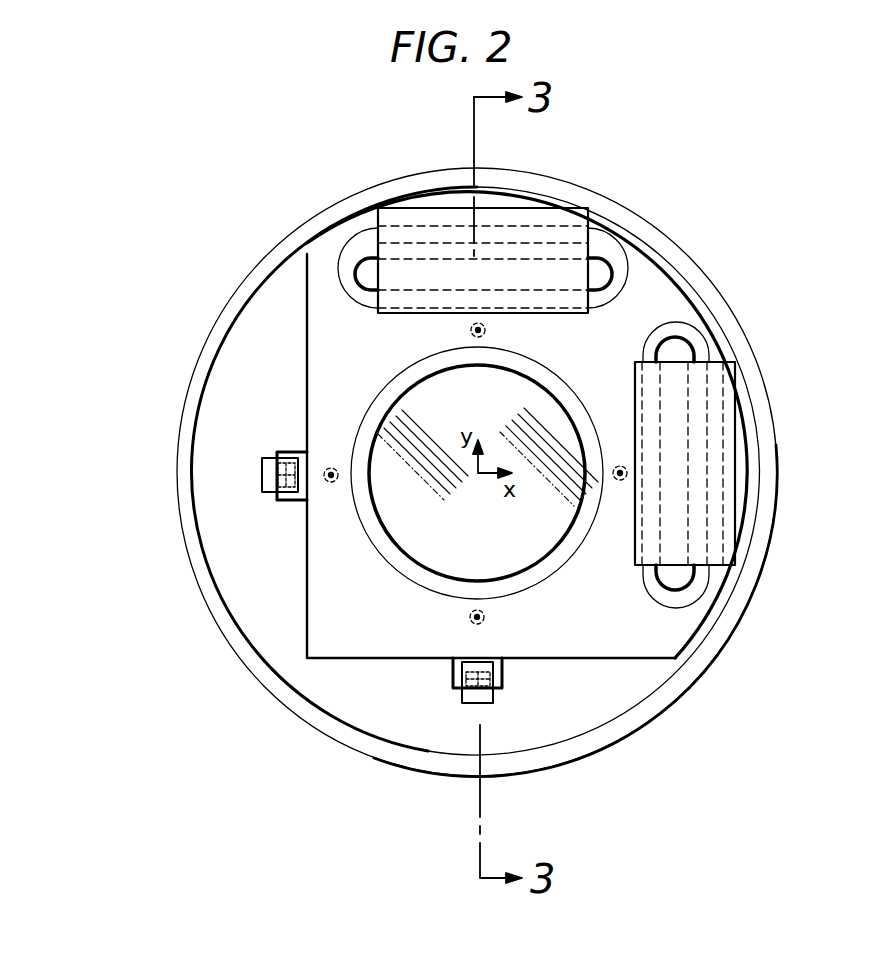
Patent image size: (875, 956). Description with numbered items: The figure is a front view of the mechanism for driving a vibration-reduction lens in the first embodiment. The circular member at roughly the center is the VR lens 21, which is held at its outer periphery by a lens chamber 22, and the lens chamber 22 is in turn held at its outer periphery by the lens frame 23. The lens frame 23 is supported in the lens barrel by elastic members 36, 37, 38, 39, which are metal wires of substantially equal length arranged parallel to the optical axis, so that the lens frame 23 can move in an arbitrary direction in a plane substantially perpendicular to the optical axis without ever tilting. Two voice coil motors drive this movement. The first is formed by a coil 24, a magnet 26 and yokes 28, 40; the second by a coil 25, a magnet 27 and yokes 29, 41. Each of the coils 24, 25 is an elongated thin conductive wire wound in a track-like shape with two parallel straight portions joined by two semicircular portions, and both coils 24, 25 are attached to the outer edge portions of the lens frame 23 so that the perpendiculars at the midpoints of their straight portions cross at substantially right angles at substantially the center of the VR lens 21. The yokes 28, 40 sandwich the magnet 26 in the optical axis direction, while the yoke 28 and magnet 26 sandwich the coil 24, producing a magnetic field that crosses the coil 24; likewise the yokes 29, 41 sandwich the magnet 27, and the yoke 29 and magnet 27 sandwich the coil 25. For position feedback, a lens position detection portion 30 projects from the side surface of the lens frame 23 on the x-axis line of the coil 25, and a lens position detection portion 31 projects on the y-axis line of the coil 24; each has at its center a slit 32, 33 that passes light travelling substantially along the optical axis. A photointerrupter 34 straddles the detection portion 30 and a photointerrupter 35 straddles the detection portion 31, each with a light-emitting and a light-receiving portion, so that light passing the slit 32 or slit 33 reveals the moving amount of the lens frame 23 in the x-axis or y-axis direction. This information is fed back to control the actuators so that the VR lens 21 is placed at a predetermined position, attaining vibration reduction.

The VR lens 21 is at (428, 535).
The lens chamber 22 is at (428, 582).
The lens frame 23 is at (320, 645).
The coil 24 is at (625, 260).
The coil 25 is at (693, 350).
The magnet 26 is at (572, 270).
The magnet 27 is at (675, 555).
The yoke 28 is at (538, 273).
The yoke 29 is at (680, 527).
The lens position detection portion 30 is at (290, 502).
The lens position detection portion 31 is at (503, 668).
The slit 32 is at (262, 462).
The slit 33 is at (463, 705).
The photointerrupter 34 is at (263, 482).
The photointerrupter 35 is at (495, 705).
The elastic member 36 is at (470, 330).
The elastic member 37 is at (328, 470).
The elastic member 38 is at (485, 617).
The elastic member 39 is at (618, 480).
The yoke 40 is at (498, 268).
The yoke 41 is at (678, 492).